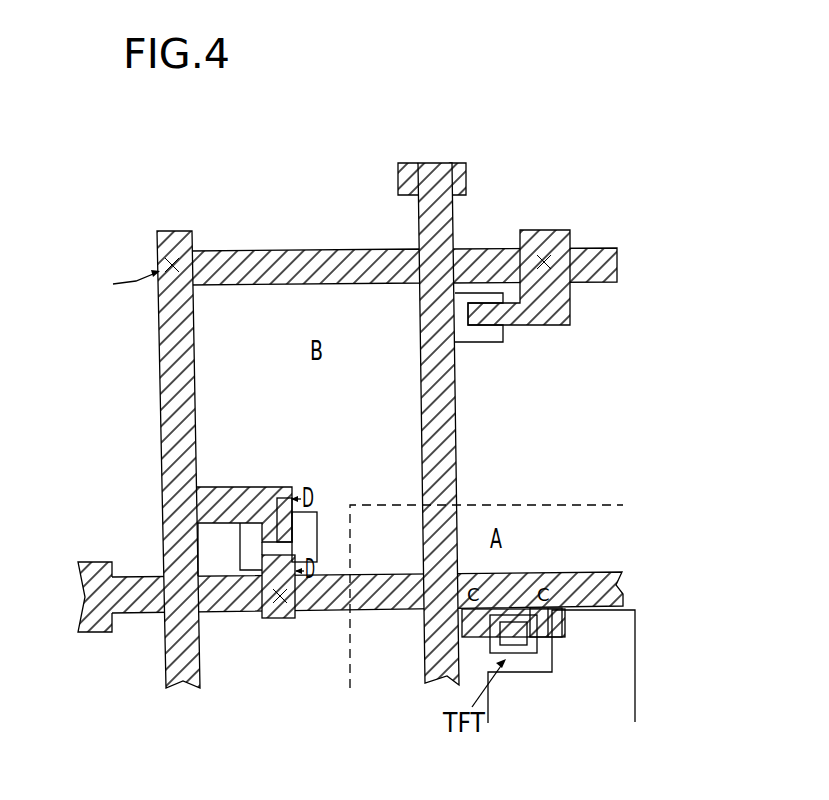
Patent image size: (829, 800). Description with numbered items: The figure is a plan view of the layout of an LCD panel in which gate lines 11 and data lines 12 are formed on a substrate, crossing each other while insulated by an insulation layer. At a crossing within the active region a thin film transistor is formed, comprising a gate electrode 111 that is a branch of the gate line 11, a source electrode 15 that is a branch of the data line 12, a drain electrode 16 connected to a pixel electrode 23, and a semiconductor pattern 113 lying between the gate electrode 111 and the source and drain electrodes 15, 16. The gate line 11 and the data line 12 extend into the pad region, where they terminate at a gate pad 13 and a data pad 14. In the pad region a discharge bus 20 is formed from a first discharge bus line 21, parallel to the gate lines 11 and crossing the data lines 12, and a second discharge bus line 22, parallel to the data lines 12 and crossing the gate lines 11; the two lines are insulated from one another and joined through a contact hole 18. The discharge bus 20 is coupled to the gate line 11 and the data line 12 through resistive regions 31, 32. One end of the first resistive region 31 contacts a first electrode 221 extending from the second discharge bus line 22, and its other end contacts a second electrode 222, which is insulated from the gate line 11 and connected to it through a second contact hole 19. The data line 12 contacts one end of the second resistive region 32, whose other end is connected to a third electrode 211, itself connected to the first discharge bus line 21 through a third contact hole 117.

The gate line 11 is at (580, 585).
The data line 12 is at (452, 455).
The gate pad 13 is at (97, 570).
The data pad 14 is at (457, 178).
The source electrode 15 is at (457, 645).
The drain electrode 16 is at (558, 620).
The contact hole 18 is at (175, 255).
The second contact hole 19 is at (298, 636).
The discharge bus 20 is at (122, 284).
The first discharge bus line 21 is at (302, 255).
The second discharge bus line 22 is at (167, 428).
The pixel electrode 23 is at (630, 647).
The first resistive region 31 is at (240, 613).
The second resistive region 32 is at (483, 342).
The gate electrode 111 is at (513, 644).
The semiconductor pattern 113 is at (493, 650).
The third contact hole 117 is at (555, 221).
The third electrode 211 is at (563, 312).
The first electrode 221 is at (243, 493).
The second electrode 222 is at (282, 613).